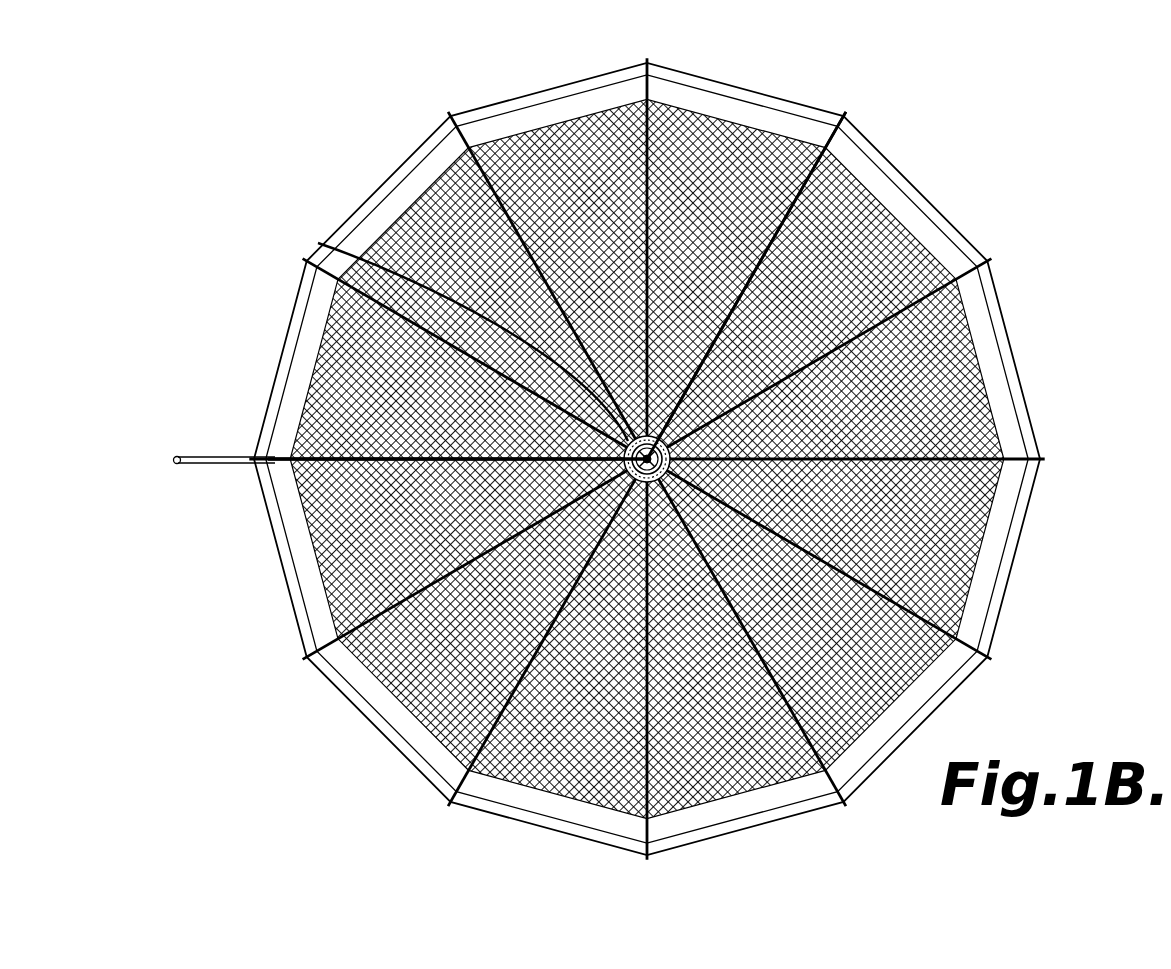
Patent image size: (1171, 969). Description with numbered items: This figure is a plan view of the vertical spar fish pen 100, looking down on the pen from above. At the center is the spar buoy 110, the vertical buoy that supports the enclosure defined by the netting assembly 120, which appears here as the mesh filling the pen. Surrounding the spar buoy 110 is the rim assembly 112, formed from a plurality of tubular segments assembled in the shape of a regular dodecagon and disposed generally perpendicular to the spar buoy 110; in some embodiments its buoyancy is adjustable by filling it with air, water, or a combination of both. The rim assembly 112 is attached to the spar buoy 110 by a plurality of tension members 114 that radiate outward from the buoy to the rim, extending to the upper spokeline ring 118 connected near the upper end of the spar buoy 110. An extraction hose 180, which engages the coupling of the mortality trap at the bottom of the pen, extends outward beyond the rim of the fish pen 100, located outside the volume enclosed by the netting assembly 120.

The vertical spar fish pen 100 is at (1034, 209).
The spar buoy 110 is at (318, 243).
The rim assembly 112 is at (770, 94).
The tension members 114 is at (840, 143).
The upper spokeline ring 118 is at (668, 452).
The netting assembly 120 is at (804, 128).
The extraction hose 180 is at (207, 455).